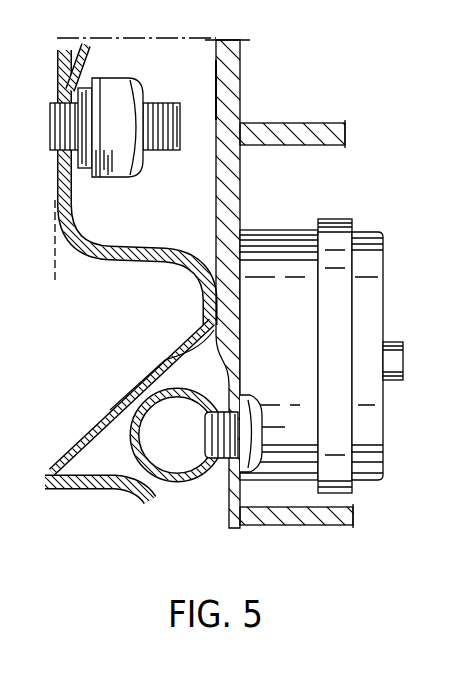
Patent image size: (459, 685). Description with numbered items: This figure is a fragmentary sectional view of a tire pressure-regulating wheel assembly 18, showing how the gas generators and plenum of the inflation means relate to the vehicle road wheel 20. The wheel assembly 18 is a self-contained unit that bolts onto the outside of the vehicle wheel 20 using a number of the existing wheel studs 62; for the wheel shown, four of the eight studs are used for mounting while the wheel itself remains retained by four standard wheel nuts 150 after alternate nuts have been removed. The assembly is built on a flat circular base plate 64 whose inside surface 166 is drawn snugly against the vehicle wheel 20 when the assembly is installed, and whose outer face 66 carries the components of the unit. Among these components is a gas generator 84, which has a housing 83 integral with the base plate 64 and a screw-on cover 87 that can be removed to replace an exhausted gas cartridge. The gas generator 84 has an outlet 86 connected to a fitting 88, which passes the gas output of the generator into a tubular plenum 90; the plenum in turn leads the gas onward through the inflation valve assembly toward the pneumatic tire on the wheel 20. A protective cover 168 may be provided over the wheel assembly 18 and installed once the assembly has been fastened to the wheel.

The tire pressure-regulating wheel assembly 18 is at (233, 534).
The vehicle road wheel 20 is at (115, 496).
The wheel stud 62 is at (167, 151).
The base plate 64 is at (241, 40).
The outer face 66 is at (240, 88).
The housing 83 is at (258, 230).
The gas generator 84 is at (384, 470).
The outlet 86 is at (246, 453).
The screw-on cover 87 is at (383, 290).
The fitting 88 is at (205, 416).
The tubular plenum 90 is at (178, 484).
The wheel nut 150 is at (100, 178).
The inside surface 166 is at (216, 88).
The protective cover 168 is at (312, 527).